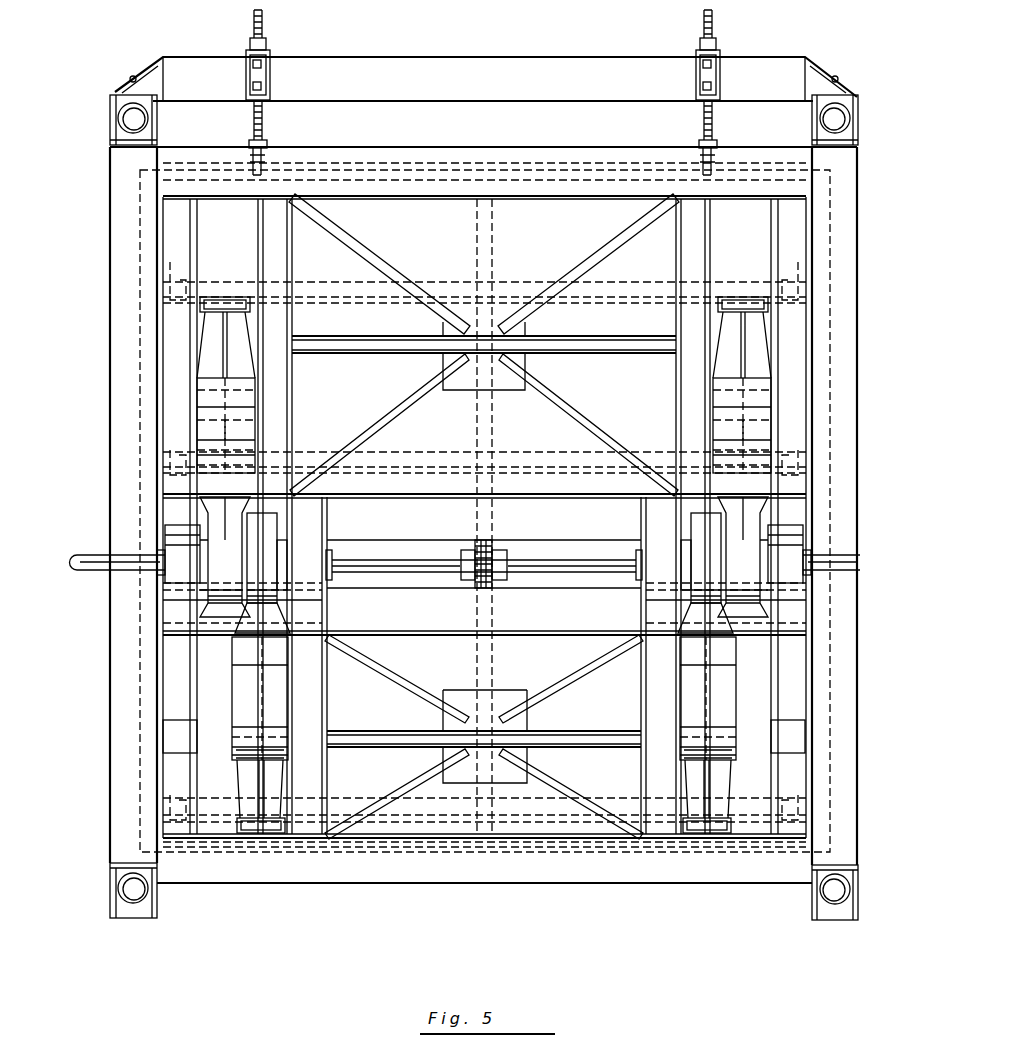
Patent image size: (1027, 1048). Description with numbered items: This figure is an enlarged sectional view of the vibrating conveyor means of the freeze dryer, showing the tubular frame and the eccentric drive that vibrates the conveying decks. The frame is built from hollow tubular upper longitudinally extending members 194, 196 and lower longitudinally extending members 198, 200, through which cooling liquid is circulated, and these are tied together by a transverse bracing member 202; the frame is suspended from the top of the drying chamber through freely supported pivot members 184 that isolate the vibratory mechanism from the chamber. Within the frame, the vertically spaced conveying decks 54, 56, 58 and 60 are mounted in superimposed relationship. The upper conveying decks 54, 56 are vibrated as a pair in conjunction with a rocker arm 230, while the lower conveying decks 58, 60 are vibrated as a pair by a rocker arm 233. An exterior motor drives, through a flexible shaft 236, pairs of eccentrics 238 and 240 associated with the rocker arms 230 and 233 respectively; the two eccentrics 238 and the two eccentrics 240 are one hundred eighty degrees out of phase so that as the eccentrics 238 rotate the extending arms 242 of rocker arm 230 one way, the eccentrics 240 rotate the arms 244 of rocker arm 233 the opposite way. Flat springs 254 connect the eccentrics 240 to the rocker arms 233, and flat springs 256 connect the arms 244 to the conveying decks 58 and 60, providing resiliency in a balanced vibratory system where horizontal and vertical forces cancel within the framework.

The conveying deck 54 is at (516, 278).
The conveying deck 56 is at (416, 449).
The conveying deck 58 is at (406, 623).
The conveying deck 60 is at (343, 795).
The pivot member 184 is at (263, 19).
The upper longitudinally extending member 194 is at (148, 121).
The upper longitudinally extending member 196 is at (822, 119).
The lower longitudinally extending member 198 is at (150, 896).
The lower longitudinally extending member 200 is at (825, 894).
The transverse bracing member 202 is at (510, 90).
The rocker arm 230 is at (242, 395).
The rocker arm 233 is at (283, 722).
The flexible shaft 236 is at (101, 556).
The eccentric 238 is at (236, 582).
The eccentric 240 is at (275, 557).
The extending arm 242 is at (232, 348).
The arm 244 is at (258, 690).
The flat spring 254 is at (278, 695).
The flat spring 256 is at (242, 440).